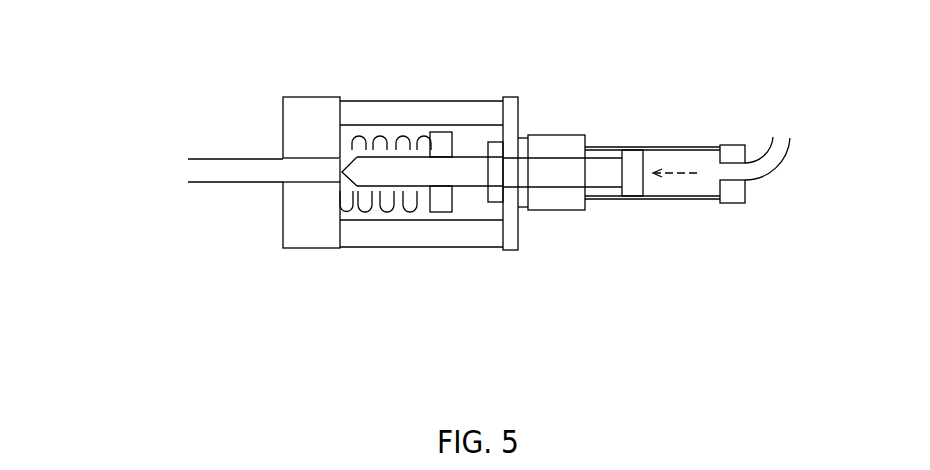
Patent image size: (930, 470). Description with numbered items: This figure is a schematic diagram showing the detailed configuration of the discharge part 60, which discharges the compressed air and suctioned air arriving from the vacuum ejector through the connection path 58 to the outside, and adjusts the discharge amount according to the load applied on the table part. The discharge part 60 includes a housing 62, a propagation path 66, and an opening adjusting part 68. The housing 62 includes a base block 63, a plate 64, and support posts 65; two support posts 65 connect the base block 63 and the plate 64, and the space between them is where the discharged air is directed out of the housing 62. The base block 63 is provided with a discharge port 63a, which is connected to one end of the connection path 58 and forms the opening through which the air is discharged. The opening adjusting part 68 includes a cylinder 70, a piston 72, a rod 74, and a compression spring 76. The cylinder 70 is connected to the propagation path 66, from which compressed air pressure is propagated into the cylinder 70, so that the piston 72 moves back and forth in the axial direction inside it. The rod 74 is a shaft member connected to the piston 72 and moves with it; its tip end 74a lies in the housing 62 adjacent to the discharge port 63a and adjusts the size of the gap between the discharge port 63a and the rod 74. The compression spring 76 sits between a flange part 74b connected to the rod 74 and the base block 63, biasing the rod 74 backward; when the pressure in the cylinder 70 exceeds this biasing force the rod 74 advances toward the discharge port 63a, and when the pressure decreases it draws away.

The connection path 58 is at (235, 204).
The discharge part 60 is at (532, 270).
The housing 62 is at (311, 100).
The base block 63 is at (311, 149).
The discharge port 63a is at (292, 157).
The plate 64 is at (511, 149).
The support post 65 is at (483, 129).
The propagation path 66 is at (775, 185).
The opening adjusting part 68 is at (421, 196).
The cylinder 70 is at (631, 149).
The piston 72 is at (636, 148).
The rod 74 is at (430, 224).
The tip end 74a is at (334, 195).
The flange part 74b is at (442, 145).
The compression spring 76 is at (385, 146).